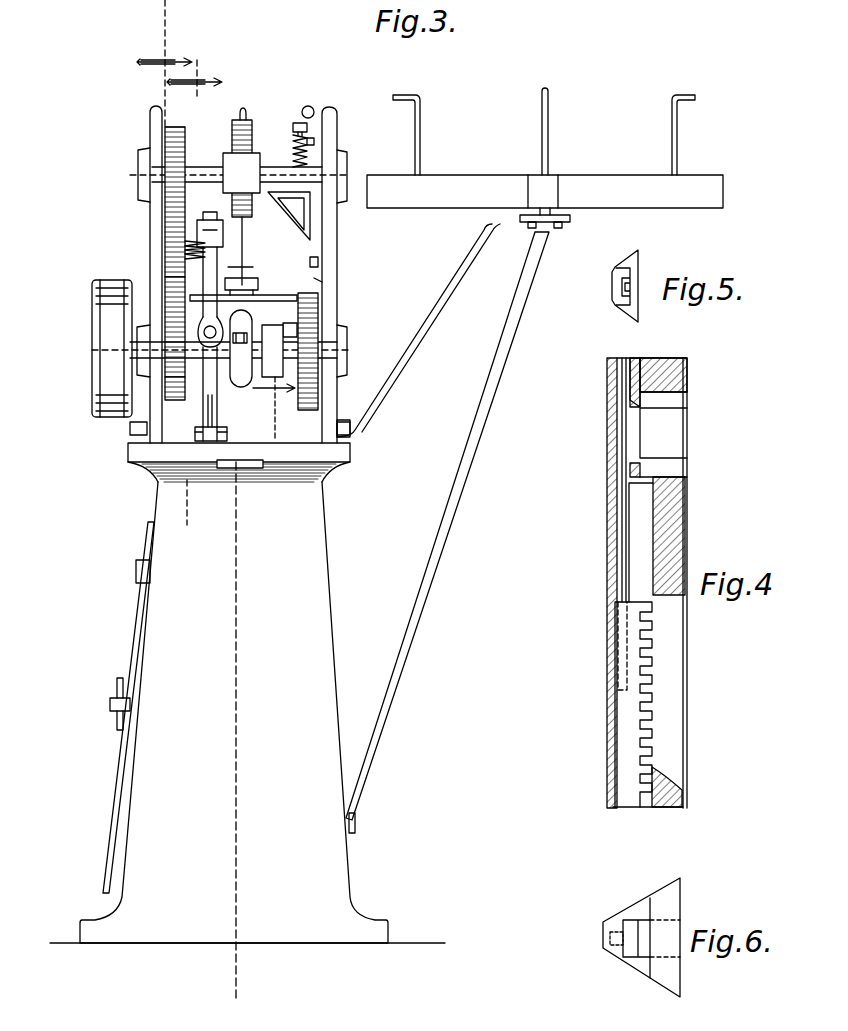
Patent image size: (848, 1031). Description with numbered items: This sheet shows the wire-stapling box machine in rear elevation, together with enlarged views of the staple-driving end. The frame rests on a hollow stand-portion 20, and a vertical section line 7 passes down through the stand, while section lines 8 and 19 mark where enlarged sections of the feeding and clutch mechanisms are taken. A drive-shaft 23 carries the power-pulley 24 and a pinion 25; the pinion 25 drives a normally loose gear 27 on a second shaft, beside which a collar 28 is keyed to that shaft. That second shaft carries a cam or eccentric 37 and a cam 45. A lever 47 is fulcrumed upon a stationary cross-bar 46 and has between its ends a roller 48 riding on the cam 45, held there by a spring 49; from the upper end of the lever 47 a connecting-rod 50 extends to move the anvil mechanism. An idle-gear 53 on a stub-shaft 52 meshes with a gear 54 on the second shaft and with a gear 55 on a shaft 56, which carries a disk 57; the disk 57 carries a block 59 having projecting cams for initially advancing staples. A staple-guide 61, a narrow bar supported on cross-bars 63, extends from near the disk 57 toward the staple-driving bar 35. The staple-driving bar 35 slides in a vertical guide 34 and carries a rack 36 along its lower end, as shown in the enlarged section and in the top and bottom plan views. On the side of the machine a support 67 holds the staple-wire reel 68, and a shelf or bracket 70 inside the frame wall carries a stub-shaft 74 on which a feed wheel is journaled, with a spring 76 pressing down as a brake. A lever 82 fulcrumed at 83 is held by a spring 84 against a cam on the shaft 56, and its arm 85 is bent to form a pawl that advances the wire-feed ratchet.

In FIG. 3, the section line 7 is at (232, 744).
In FIG. 3, the section line 8 is at (179, 60).
In FIG. 3, the section line 19 is at (287, 340).
In FIG. 3, the hollow stand-portion 20 is at (247, 693).
In FIG. 3, the drive-shaft 23 is at (322, 340).
In FIG. 3, the power-pulley 24 is at (92, 370).
In FIG. 3, the pinion 25 is at (318, 350).
In FIG. 3, the normally loose gear 27 is at (318, 400).
In FIG. 3, the collar 28 is at (265, 380).
In FIG. 5, the vertical guide 34 is at (617, 305).
In FIG. 4, the vertical guide 34 is at (690, 510).
In FIG. 6, the vertical guide 34 is at (663, 908).
In FIG. 4, the staple-driving bar 35 is at (620, 543).
In FIG. 4, the rack 36 is at (625, 712).
In FIG. 6, the rack 36 is at (625, 925).
In FIG. 3, the cam or eccentric 37 is at (252, 330).
In FIG. 3, the cam 45 is at (237, 392).
In FIG. 3, the stationary cross-bar 46 is at (200, 435).
In FIG. 3, the lever 47 is at (203, 400).
In FIG. 3, the roller 48 is at (216, 327).
In FIG. 3, the spring 49 is at (195, 258).
In FIG. 3, the connecting-rod 50 is at (210, 221).
In FIG. 3, the stub-shaft 52 is at (167, 230).
In FIG. 3, the idle-gear 53 is at (185, 250).
In FIG. 3, the gear 54 is at (170, 387).
In FIG. 3, the gear 55 is at (180, 128).
In FIG. 3, the shaft 56 is at (200, 162).
In FIG. 3, the disk 57 is at (233, 125).
In FIG. 3, the block 59 is at (245, 118).
In FIG. 3, the staple-guide 61 is at (254, 246).
In FIG. 3, the cross-bars 63 is at (318, 282).
In FIG. 3, the support 67 is at (528, 224).
In FIG. 3, the staple-wire reel 68 is at (560, 190).
In FIG. 3, the shelf or bracket 70 is at (293, 198).
In FIG. 3, the stub-shaft 74 is at (298, 122).
In FIG. 3, the spring 76 is at (294, 145).
In FIG. 3, the lever 82 is at (337, 213).
In FIG. 3, the fulcrum 83 is at (309, 262).
In FIG. 3, the spring 84 is at (311, 106).
In FIG. 3, the arm 85 is at (314, 141).